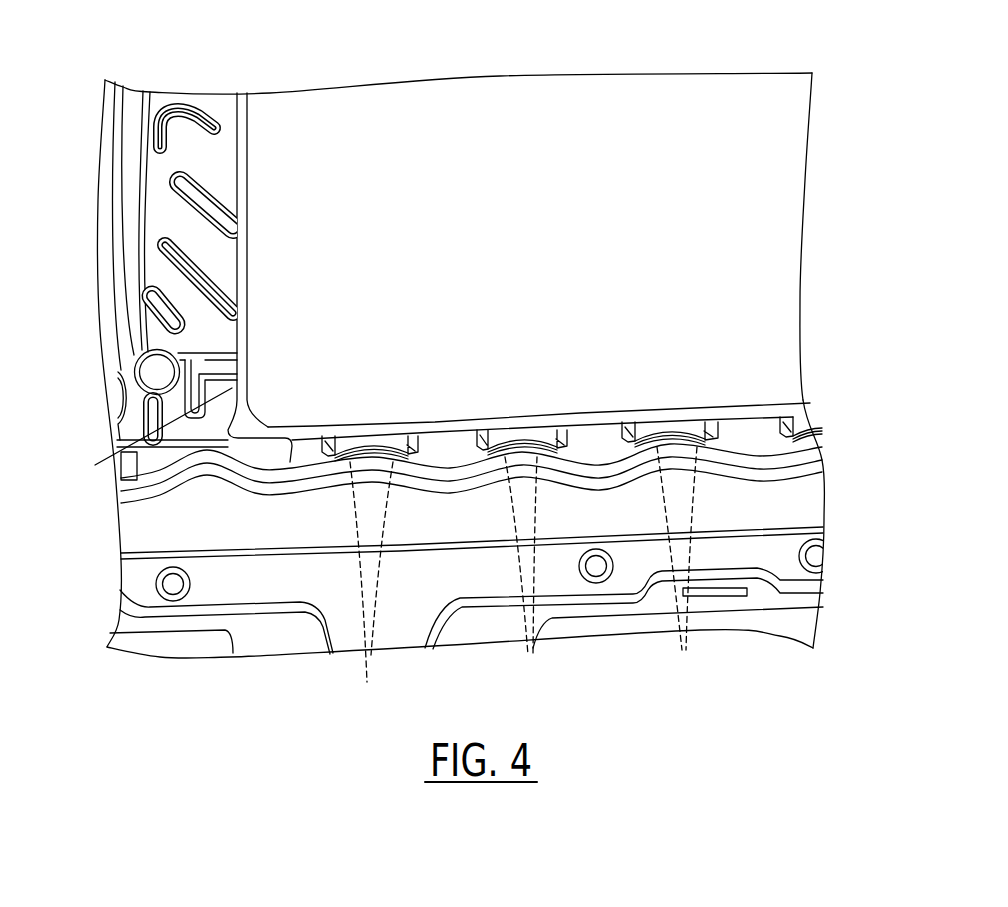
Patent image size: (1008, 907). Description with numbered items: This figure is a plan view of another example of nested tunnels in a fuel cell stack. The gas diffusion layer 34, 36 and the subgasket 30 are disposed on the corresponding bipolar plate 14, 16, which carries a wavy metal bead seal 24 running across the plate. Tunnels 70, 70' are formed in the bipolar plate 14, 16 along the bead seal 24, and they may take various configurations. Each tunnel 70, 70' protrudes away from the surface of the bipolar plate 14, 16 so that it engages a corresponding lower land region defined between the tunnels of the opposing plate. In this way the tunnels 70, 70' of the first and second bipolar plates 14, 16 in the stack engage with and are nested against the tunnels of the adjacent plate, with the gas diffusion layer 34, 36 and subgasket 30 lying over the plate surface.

The bipolar plate 14 is at (495, 369).
The bipolar plate 16 is at (803, 497).
The wavy metal bead seal 24 is at (813, 448).
The subgasket 30 is at (147, 444).
The gas diffusion layer 34 is at (458, 244).
The gas diffusion layer 36 is at (528, 218).
The tunnel 70 is at (540, 531).
The tunnel 70' is at (523, 579).